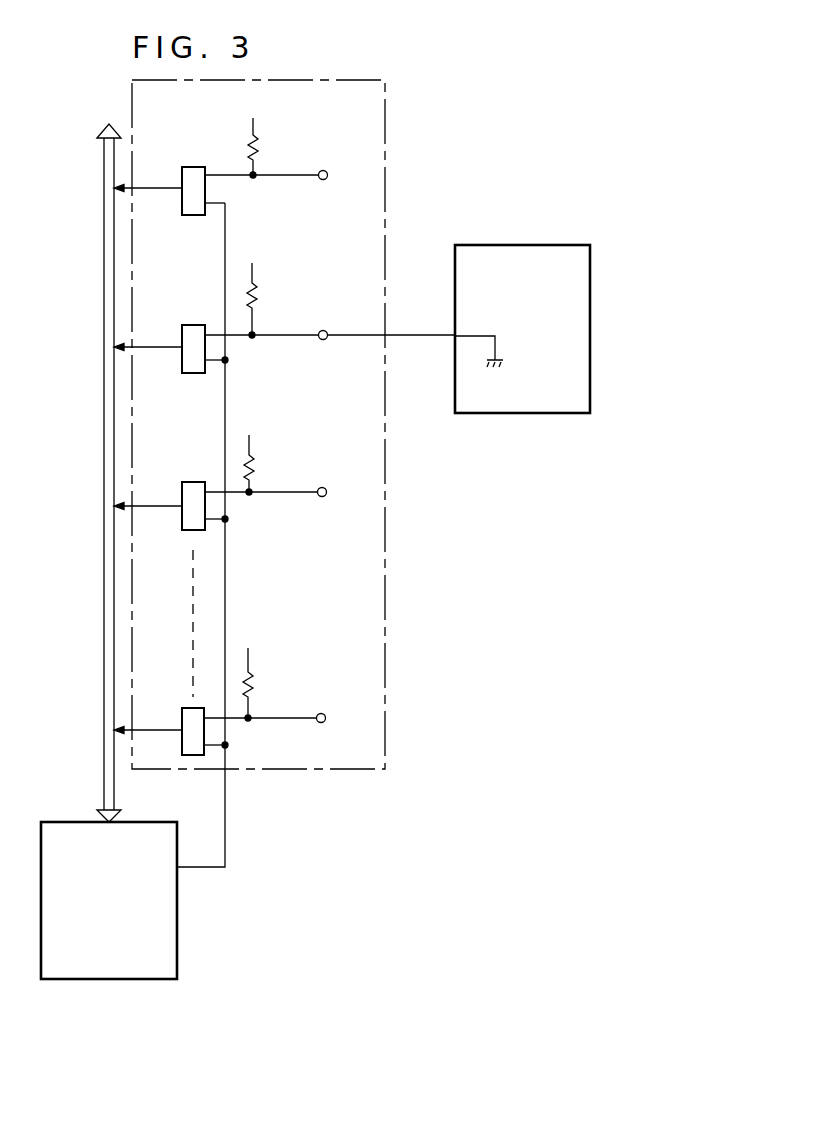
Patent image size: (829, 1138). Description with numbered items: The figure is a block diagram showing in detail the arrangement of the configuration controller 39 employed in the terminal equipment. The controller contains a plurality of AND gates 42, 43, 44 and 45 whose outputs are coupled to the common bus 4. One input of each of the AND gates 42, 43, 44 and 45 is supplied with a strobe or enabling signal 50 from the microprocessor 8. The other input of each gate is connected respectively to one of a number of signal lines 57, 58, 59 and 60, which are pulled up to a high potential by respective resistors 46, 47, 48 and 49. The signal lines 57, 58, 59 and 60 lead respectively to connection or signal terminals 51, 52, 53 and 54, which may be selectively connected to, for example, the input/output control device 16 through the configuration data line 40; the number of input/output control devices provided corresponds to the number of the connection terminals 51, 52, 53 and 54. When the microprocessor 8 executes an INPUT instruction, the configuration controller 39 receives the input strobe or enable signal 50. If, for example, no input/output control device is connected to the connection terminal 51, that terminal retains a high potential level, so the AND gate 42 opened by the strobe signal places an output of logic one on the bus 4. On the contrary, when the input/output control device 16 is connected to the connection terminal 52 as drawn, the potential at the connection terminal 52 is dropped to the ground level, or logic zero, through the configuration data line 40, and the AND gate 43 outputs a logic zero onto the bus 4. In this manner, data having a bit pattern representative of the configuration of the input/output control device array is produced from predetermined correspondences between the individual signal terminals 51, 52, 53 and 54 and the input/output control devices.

The common bus 4 is at (102, 232).
The microprocessor 8 is at (52, 822).
The input/output control device 16 is at (518, 222).
The configuration controller 39 is at (385, 112).
The configuration data line 40 is at (404, 330).
The AND gate 42 is at (196, 167).
The AND gate 43 is at (196, 325).
The AND gate 44 is at (197, 482).
The AND gate 45 is at (187, 708).
The resistor 46 is at (258, 158).
The resistor 47 is at (258, 301).
The resistor 48 is at (258, 471).
The resistor 49 is at (252, 686).
The strobe or enabling signal 50 is at (203, 868).
The connection terminal 51 is at (327, 174).
The connection terminal 52 is at (325, 329).
The connection terminal 53 is at (325, 486).
The connection terminal 54 is at (325, 712).
The signal line 57 is at (262, 177).
The signal line 58 is at (270, 337).
The signal line 59 is at (272, 495).
The signal line 60 is at (270, 720).